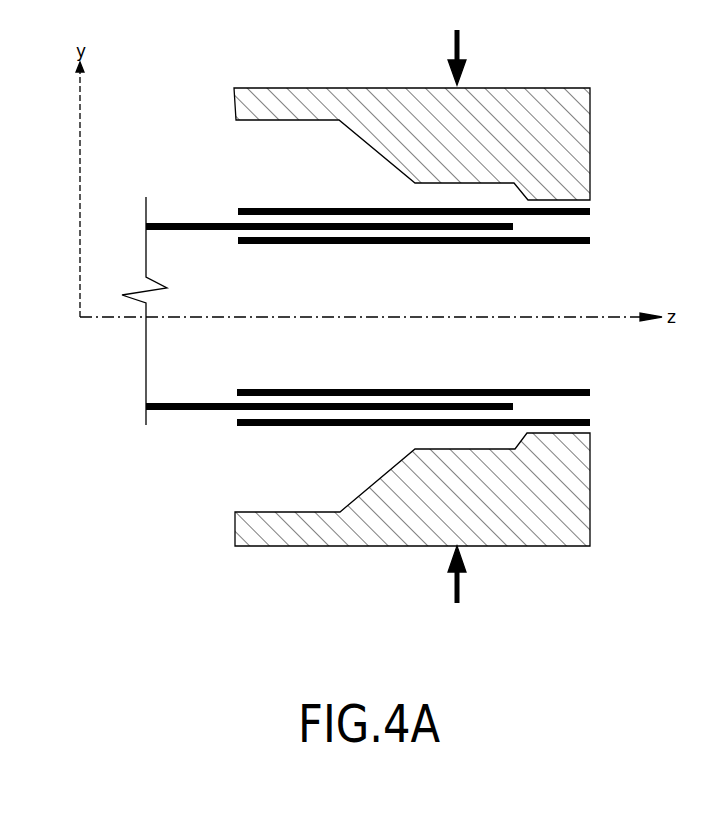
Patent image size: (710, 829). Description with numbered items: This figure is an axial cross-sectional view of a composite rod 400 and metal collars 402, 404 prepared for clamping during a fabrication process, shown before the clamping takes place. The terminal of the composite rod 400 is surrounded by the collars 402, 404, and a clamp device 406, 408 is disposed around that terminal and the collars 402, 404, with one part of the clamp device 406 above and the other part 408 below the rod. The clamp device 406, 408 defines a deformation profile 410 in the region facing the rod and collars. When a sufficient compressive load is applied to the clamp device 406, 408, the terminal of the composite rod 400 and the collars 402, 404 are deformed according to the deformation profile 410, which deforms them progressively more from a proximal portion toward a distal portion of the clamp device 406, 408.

The composite rod 400 is at (188, 410).
The metal collar 402 is at (478, 246).
The metal collar 404 is at (237, 200).
The clamp device 406 is at (545, 88).
The clamp device 408 is at (539, 547).
The deformation profile 410 is at (328, 468).